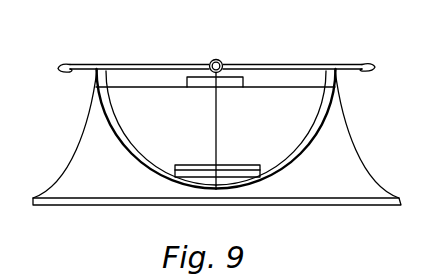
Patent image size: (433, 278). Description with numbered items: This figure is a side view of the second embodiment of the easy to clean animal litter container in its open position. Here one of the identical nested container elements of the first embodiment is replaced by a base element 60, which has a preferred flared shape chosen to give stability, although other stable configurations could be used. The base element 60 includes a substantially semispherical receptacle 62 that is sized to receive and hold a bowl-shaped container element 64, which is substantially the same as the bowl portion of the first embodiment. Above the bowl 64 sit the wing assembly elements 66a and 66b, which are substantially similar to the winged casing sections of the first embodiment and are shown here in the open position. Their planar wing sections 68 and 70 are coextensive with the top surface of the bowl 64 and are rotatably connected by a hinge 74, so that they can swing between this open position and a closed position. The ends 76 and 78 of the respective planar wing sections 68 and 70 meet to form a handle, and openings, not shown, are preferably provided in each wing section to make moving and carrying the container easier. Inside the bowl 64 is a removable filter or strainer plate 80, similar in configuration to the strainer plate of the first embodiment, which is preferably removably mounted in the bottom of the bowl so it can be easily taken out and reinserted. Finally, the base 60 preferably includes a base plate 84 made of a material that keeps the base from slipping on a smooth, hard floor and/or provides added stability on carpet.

The base element 60 is at (95, 190).
The semispherical receptacle 62 is at (117, 122).
The bowl-shaped container element 64 is at (311, 122).
The wing assembly element 66a is at (190, 123).
The wing assembly element 66b is at (272, 121).
The planar wing section 68 is at (128, 64).
The planar wing section 70 is at (279, 63).
The hinge 74 is at (217, 58).
The end of planar wing section 76 is at (62, 67).
The end of planar wing section 78 is at (368, 65).
The strainer plate 80 is at (191, 172).
The base plate 84 is at (338, 198).